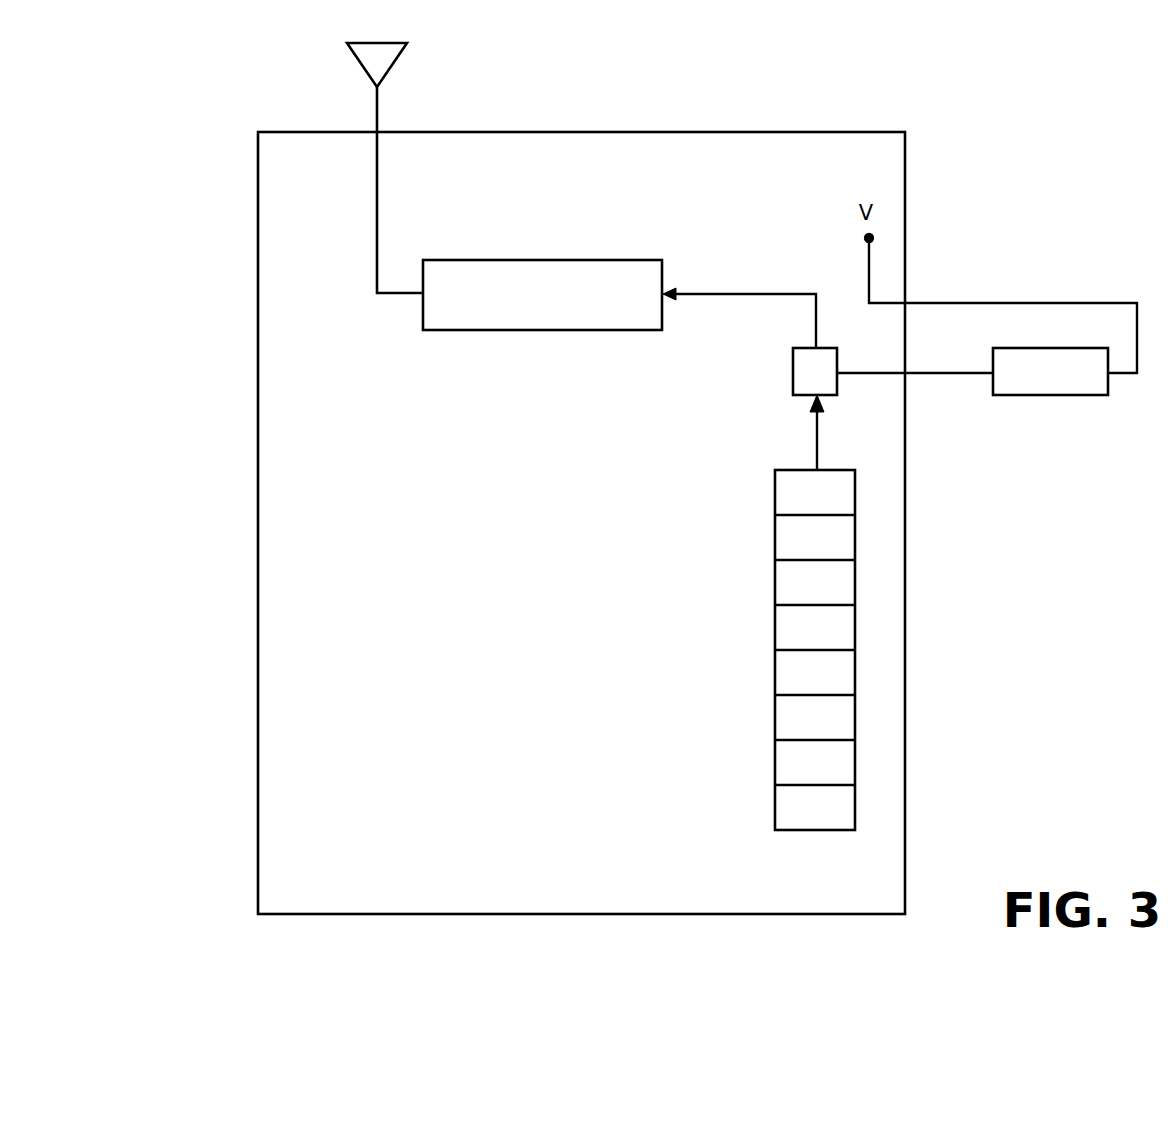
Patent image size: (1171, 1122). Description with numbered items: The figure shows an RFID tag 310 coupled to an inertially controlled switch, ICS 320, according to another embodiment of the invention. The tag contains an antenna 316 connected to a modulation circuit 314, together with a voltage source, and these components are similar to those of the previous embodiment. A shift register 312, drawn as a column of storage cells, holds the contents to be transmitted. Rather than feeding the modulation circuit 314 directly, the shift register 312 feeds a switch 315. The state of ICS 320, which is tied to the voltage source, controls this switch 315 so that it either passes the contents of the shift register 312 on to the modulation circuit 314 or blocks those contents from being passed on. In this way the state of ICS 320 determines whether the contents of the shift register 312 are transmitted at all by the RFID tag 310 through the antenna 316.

The RFID tag 310 is at (276, 671).
The shift register 312 is at (857, 611).
The modulation circuit 314 is at (465, 330).
The switch 315 is at (838, 381).
The antenna 316 is at (349, 58).
The ICS 320 is at (1053, 396).